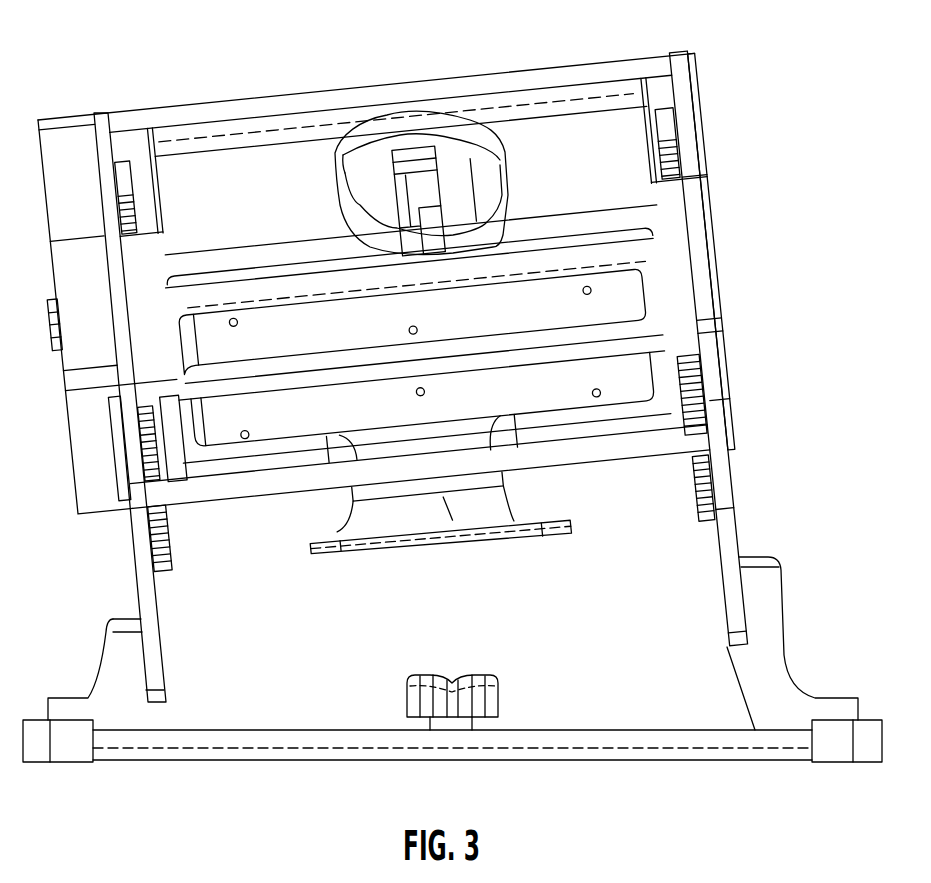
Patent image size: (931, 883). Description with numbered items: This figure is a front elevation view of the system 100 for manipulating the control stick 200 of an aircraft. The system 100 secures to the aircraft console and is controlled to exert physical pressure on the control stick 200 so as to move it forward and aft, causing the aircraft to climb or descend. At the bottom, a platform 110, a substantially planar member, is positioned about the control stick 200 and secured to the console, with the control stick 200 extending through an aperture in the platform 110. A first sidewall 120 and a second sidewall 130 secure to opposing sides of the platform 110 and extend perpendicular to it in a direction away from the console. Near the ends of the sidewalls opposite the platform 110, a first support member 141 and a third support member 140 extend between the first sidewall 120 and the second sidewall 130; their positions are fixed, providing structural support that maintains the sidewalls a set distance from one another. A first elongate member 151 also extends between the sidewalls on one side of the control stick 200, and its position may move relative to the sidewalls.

The system 100 is at (123, 68).
The platform 110 is at (143, 782).
The first sidewall 120 is at (728, 222).
The second sidewall 130 is at (100, 563).
The third support member 140 is at (195, 96).
The first support member 141 is at (258, 506).
The first elongate member 151 is at (217, 270).
The control stick 200 is at (524, 152).